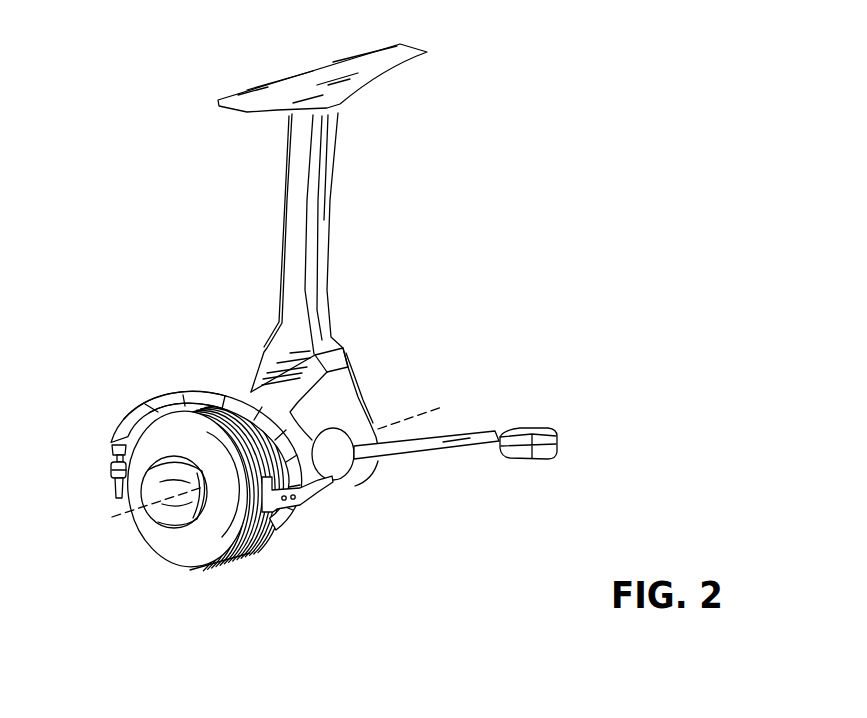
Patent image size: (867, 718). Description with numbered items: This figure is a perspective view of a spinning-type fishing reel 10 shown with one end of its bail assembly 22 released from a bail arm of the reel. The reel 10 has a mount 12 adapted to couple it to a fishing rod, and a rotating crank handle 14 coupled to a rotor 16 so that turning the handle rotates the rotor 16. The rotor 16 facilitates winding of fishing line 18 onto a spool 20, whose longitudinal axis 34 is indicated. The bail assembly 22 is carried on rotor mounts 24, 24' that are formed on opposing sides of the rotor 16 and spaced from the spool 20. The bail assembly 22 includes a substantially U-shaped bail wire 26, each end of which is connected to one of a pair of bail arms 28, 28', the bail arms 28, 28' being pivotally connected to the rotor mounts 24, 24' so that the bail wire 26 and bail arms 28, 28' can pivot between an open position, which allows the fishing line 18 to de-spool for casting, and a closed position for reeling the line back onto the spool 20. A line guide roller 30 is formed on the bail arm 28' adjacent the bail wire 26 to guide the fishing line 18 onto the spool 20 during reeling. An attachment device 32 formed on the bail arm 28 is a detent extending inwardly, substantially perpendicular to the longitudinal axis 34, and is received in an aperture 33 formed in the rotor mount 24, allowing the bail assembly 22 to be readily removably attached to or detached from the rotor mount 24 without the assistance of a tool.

The fishing reel 10 is at (491, 127).
The mount 12 is at (320, 222).
The crank handle 14 is at (531, 436).
The rotor 16 is at (361, 476).
The fishing line 18 is at (282, 547).
The spool 20 is at (238, 564).
The bail assembly 22 is at (116, 403).
The rotor mount 24 is at (366, 476).
The rotor mount 24' is at (188, 362).
The bail wire 26 is at (131, 410).
The bail arm 28 is at (301, 542).
The bail arm 28' is at (85, 510).
The line guide roller 30 is at (110, 462).
The attachment device 32 is at (300, 530).
The aperture 33 is at (330, 518).
The longitudinal axis 34 is at (113, 517).